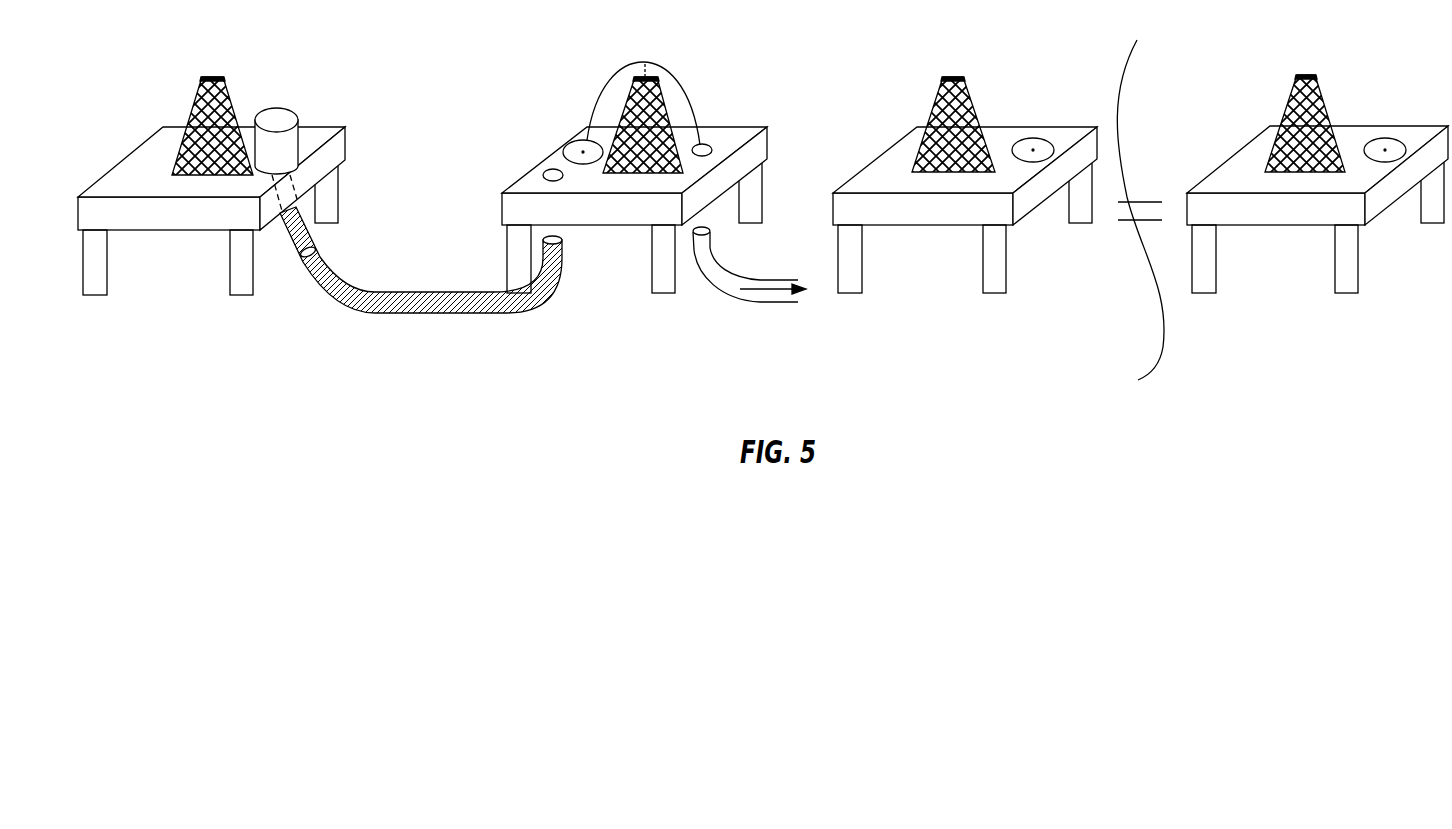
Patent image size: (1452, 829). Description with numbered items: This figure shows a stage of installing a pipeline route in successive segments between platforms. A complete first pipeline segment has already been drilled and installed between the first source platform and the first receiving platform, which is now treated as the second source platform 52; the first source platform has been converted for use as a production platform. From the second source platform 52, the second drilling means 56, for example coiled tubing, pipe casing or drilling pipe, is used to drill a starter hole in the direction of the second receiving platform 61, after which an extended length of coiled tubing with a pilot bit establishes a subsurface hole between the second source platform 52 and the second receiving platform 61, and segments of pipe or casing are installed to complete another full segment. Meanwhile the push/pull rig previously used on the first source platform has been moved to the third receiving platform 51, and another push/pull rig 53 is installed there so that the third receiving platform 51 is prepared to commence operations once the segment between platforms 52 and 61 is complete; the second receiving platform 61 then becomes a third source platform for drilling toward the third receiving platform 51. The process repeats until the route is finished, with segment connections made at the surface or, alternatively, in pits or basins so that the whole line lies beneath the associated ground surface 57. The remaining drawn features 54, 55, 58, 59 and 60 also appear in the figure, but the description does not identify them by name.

The third receiving platform 51 is at (1250, 222).
The second source platform 52 is at (573, 222).
The push/pull rig 53 is at (1308, 75).
The receptacle 54 is at (1037, 145).
The spray stream 55 is at (643, 62).
The second drilling means 56 is at (587, 138).
The ground surface 57 is at (794, 390).
The pile of material 58 is at (953, 75).
The hose 59 is at (383, 292).
The outlet hose 60 is at (713, 232).
The second receiving platform 61 is at (897, 222).